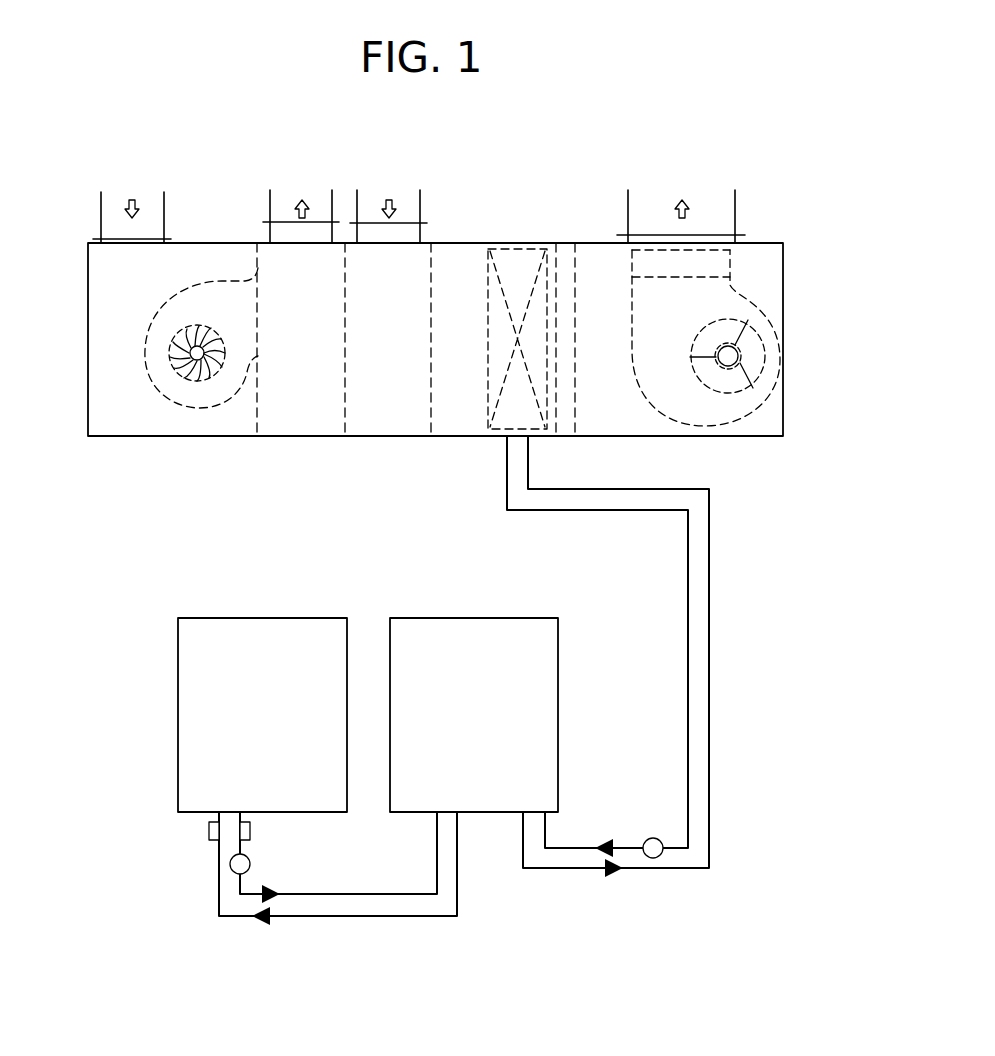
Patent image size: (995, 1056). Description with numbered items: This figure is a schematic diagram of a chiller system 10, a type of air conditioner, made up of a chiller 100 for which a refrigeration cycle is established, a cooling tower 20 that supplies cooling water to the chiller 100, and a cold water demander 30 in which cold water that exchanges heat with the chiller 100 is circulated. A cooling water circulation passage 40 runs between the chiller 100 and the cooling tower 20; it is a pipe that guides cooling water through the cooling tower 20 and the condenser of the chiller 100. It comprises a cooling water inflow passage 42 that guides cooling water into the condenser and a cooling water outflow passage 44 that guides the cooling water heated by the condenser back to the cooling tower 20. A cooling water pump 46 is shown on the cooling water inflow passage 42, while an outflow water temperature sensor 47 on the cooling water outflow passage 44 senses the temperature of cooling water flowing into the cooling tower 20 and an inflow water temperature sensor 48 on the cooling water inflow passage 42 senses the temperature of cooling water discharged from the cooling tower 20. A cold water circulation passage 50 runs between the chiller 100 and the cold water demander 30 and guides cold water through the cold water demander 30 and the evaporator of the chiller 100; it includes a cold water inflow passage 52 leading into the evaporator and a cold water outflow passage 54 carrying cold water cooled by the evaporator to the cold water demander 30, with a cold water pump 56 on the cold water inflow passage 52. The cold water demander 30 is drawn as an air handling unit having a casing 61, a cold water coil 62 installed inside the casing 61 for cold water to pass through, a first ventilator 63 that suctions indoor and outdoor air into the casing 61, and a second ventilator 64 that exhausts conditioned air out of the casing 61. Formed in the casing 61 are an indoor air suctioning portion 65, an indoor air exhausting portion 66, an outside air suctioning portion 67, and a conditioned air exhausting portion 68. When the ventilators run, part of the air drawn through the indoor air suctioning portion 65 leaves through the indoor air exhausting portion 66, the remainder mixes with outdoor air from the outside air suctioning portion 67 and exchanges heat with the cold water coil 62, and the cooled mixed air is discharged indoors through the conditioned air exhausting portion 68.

The chiller system 10 is at (736, 118).
The cooling tower 20 is at (328, 611).
The cold water demander 30 is at (227, 455).
The cooling water circulation passage 40 is at (299, 912).
The cooling water inflow passage 42 is at (360, 893).
The cooling water outflow passage 44 is at (298, 918).
The cooling water pump 46 is at (252, 862).
The outflow water temperature sensor 47 is at (208, 831).
The inflow water temperature sensor 48 is at (252, 829).
The cold water circulation passage 50 is at (659, 652).
The cold water inflow passage 52 is at (688, 661).
The cold water outflow passage 54 is at (712, 647).
The cold water pump 56 is at (653, 837).
The casing 61 is at (493, 243).
The cold water coil 62 is at (487, 397).
The first ventilator 63 is at (157, 337).
The second ventilator 64 is at (766, 354).
The indoor air suctioning portion 65 is at (110, 238).
The indoor air exhausting portion 66 is at (281, 221).
The outside air suctioning portion 67 is at (408, 222).
The conditioned air exhausting portion 68 is at (724, 234).
The chiller 100 is at (539, 611).